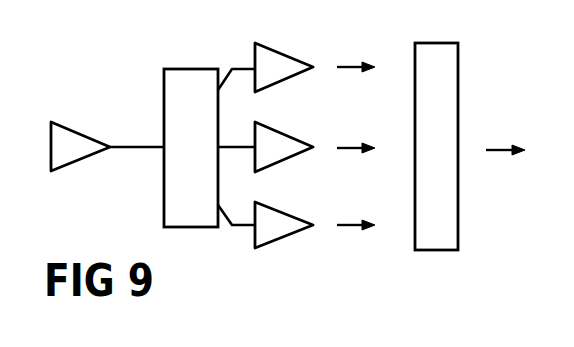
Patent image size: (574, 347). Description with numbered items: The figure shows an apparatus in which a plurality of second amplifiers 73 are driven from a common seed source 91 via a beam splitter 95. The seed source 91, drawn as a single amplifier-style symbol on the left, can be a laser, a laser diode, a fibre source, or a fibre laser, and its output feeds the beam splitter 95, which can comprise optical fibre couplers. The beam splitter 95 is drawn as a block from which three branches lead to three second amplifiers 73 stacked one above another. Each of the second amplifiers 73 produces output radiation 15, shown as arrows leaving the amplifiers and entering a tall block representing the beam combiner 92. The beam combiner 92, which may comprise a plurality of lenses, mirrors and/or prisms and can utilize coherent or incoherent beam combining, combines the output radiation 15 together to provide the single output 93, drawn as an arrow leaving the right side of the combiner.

The seed source 91 is at (78, 129).
The beam splitter 95 is at (186, 69).
The second amplifiers 73 is at (283, 55).
The output radiation 15 is at (348, 64).
The beam combiner 92 is at (459, 77).
The output 93 is at (498, 149).